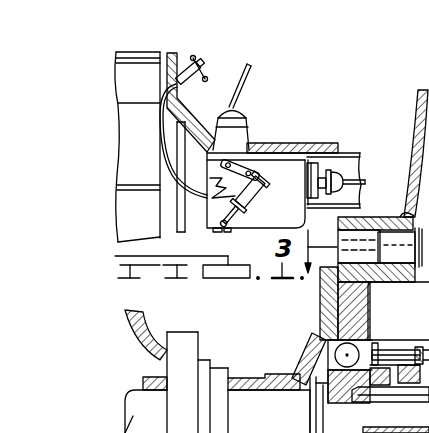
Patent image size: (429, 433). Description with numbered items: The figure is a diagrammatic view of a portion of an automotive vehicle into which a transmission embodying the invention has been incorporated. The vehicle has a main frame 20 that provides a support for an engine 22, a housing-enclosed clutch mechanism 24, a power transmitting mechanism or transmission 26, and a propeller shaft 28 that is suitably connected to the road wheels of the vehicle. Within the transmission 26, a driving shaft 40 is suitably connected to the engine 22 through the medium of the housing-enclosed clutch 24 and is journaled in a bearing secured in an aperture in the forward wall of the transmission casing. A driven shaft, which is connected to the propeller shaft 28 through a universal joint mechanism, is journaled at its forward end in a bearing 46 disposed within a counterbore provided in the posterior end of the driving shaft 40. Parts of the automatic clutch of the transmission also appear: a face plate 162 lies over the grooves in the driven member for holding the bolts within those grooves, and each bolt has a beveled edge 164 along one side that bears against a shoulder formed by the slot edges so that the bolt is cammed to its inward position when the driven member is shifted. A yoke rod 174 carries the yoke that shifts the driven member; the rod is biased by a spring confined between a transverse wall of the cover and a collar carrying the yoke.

The main frame 20 is at (342, 162).
The engine 22 is at (137, 147).
The housing-enclosed clutch mechanism 24 is at (189, 201).
The power transmitting mechanism 26 is at (272, 148).
The propeller shaft 28 is at (365, 188).
The driving shaft 40 is at (269, 411).
The bearing 46 is at (420, 391).
The face plate 162 is at (428, 345).
The beveled edge 164 is at (398, 311).
The yoke rod 174 is at (394, 243).